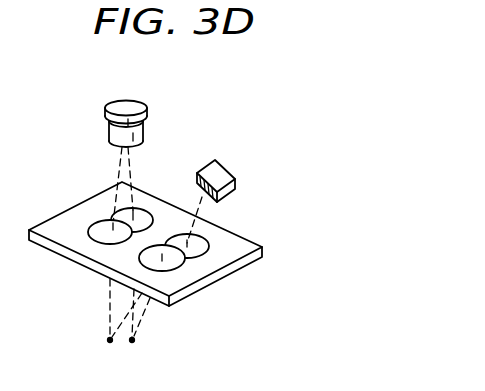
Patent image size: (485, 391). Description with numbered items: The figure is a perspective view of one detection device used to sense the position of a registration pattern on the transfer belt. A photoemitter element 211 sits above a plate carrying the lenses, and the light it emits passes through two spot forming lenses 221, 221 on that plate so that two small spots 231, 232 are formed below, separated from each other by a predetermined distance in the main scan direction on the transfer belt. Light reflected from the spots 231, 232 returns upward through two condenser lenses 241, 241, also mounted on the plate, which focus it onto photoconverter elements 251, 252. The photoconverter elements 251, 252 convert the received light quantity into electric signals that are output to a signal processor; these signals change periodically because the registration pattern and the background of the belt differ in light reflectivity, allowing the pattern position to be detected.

The photoemitter element 211 is at (122, 103).
The spot forming lens 221 is at (100, 221).
The spot 231 is at (107, 340).
The spot 232 is at (135, 340).
The condenser lens 241 is at (209, 241).
The photoconverter element 251 is at (239, 184).
The photoconverter element 252 is at (249, 150).